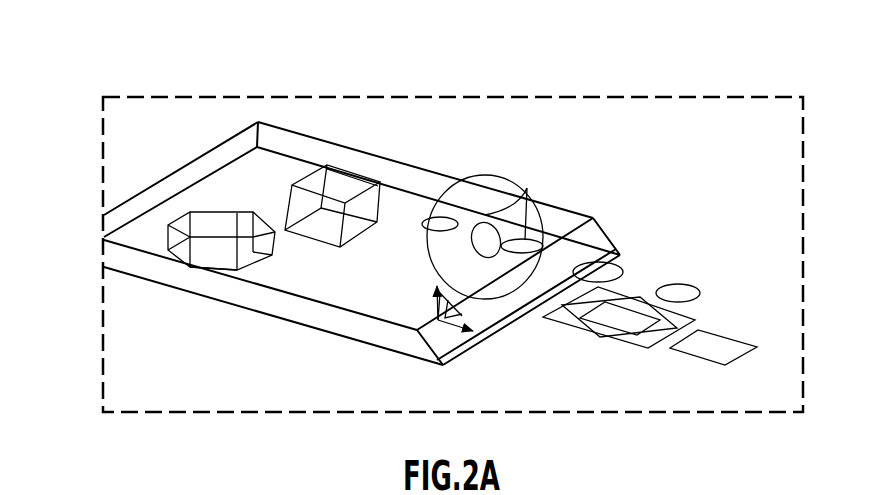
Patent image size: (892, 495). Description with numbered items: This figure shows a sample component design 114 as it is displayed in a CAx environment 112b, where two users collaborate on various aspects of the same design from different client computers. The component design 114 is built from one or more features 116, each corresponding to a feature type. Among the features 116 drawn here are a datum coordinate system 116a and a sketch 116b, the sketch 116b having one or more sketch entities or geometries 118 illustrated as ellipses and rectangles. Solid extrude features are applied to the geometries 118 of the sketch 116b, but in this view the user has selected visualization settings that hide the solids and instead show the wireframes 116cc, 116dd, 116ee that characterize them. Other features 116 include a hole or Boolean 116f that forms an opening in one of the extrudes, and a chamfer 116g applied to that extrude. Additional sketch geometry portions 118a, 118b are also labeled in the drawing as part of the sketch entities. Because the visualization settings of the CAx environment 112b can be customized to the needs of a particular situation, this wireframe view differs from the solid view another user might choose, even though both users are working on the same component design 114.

The second CAx environment 112b is at (130, 93).
The component design 114 is at (187, 154).
The features 116 is at (666, 284).
The datum coordinate system 116a is at (428, 343).
The sketch 116b is at (716, 307).
The wireframe 116cc is at (423, 162).
The wireframe 116dd is at (363, 160).
The wireframe geometry 116ee is at (514, 174).
The hole or Boolean 116f is at (212, 207).
The chamfer 116g is at (425, 338).
The sketch entities or geometries 118 is at (514, 324).
The adhesive portion 118a is at (233, 271).
The adhesive portion 118b is at (527, 190).